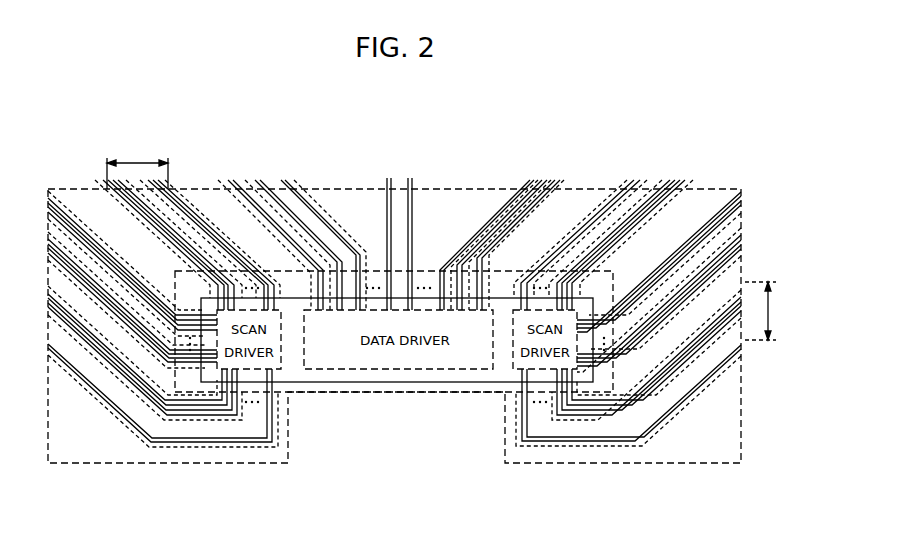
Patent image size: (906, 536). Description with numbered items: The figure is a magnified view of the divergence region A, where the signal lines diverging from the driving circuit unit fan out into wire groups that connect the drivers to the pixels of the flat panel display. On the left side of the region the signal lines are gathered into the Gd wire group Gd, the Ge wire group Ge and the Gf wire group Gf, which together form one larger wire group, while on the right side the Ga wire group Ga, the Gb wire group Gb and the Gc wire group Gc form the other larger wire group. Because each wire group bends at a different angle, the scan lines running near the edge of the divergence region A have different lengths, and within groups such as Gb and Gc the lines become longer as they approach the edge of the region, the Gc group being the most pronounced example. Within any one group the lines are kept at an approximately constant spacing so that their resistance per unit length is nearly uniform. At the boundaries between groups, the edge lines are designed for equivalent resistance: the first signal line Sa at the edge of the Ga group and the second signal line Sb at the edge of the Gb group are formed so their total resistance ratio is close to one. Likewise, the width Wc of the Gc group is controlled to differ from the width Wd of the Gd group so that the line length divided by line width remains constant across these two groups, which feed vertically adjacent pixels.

The divergence region A is at (232, 464).
The Gd wire group Gd is at (178, 249).
The Ge wire group Ge is at (110, 300).
The Gf wire group Gf is at (112, 417).
The Ga wire group Ga is at (633, 238).
The Gb wire group Gb is at (683, 307).
The Gc wire group Gc is at (680, 415).
The first signal line Sa is at (617, 243).
The second signal line Sb is at (692, 236).
The width of the wire group Gd Wd is at (137, 166).
The width of the wire group Gc Wc is at (768, 311).